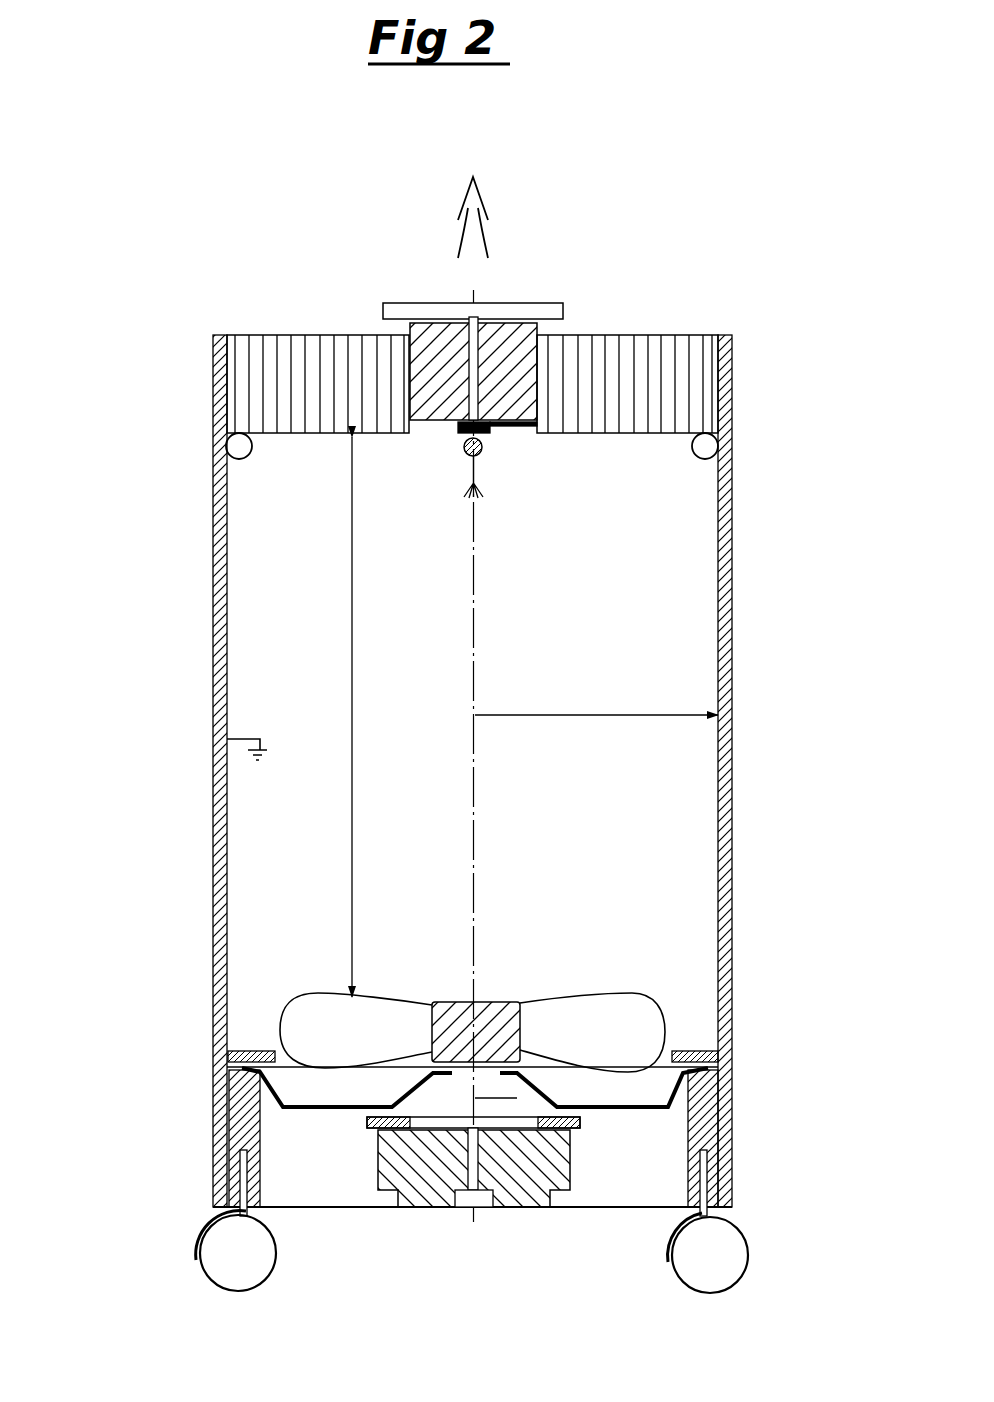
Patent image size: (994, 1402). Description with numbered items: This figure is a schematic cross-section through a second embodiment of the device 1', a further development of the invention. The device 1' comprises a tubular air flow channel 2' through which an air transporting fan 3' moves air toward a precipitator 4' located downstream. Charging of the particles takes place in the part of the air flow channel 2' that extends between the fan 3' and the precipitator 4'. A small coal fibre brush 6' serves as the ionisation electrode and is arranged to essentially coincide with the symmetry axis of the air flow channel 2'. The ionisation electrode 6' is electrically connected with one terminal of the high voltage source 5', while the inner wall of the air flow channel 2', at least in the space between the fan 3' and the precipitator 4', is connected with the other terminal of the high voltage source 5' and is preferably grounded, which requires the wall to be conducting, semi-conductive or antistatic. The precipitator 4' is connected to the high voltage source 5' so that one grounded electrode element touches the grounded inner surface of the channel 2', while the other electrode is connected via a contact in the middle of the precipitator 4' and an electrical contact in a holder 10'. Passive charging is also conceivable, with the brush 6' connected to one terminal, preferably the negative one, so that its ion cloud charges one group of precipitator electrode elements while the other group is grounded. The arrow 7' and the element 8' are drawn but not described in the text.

The device 1' is at (455, 717).
The air flow channel 2' is at (414, 814).
The fan 3' is at (400, 1032).
The precipitator 4' is at (418, 326).
The high voltage source 5' is at (460, 1207).
The coal fibre brush 6' is at (292, 540).
The air outlet flow 7' is at (537, 215).
The insulating holder 8' is at (532, 333).
The holder 10' is at (647, 533).